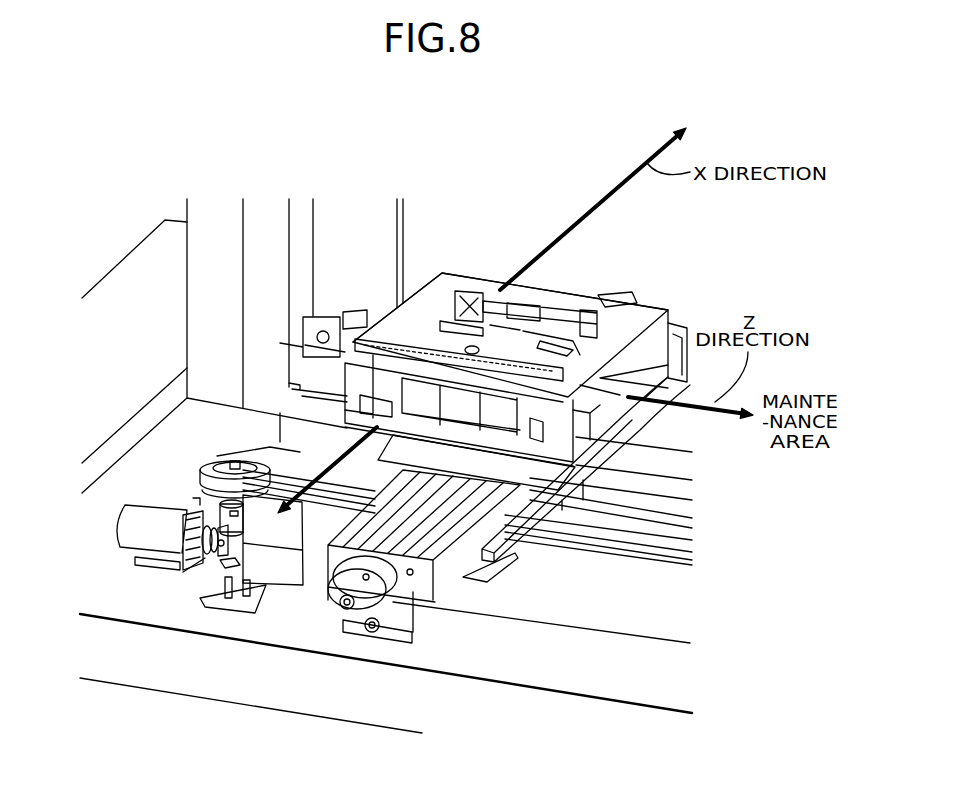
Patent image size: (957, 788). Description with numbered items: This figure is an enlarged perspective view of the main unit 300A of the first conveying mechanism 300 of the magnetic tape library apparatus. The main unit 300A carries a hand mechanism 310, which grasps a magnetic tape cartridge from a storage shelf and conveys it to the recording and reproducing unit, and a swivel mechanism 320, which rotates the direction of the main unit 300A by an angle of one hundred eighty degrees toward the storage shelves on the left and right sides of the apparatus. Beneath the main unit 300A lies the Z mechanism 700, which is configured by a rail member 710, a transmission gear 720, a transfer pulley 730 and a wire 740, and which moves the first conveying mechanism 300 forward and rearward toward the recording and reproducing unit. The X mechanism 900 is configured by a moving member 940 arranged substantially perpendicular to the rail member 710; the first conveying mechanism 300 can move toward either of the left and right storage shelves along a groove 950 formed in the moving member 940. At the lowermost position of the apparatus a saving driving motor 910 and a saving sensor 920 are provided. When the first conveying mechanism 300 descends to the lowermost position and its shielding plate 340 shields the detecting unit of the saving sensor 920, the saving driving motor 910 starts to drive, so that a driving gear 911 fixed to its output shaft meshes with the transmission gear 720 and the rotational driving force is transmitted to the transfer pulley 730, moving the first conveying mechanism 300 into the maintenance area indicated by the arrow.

The first conveying mechanism 300 is at (540, 162).
The main unit 300A is at (580, 287).
The hand mechanism 310 is at (377, 355).
The swivel mechanism 320 is at (568, 397).
The shielding plate 340 is at (240, 560).
The Z mechanism 700 is at (615, 627).
The rail member 710 is at (527, 600).
The transmission gear 720 is at (203, 500).
The transfer pulley 730 is at (218, 466).
The wire 740 is at (290, 445).
The X mechanism 900 is at (368, 657).
The saving driving motor 910 is at (135, 557).
The driving gear 911 is at (213, 550).
The saving sensor 920 is at (238, 573).
The moving member 940 is at (457, 563).
The groove 950 is at (400, 473).